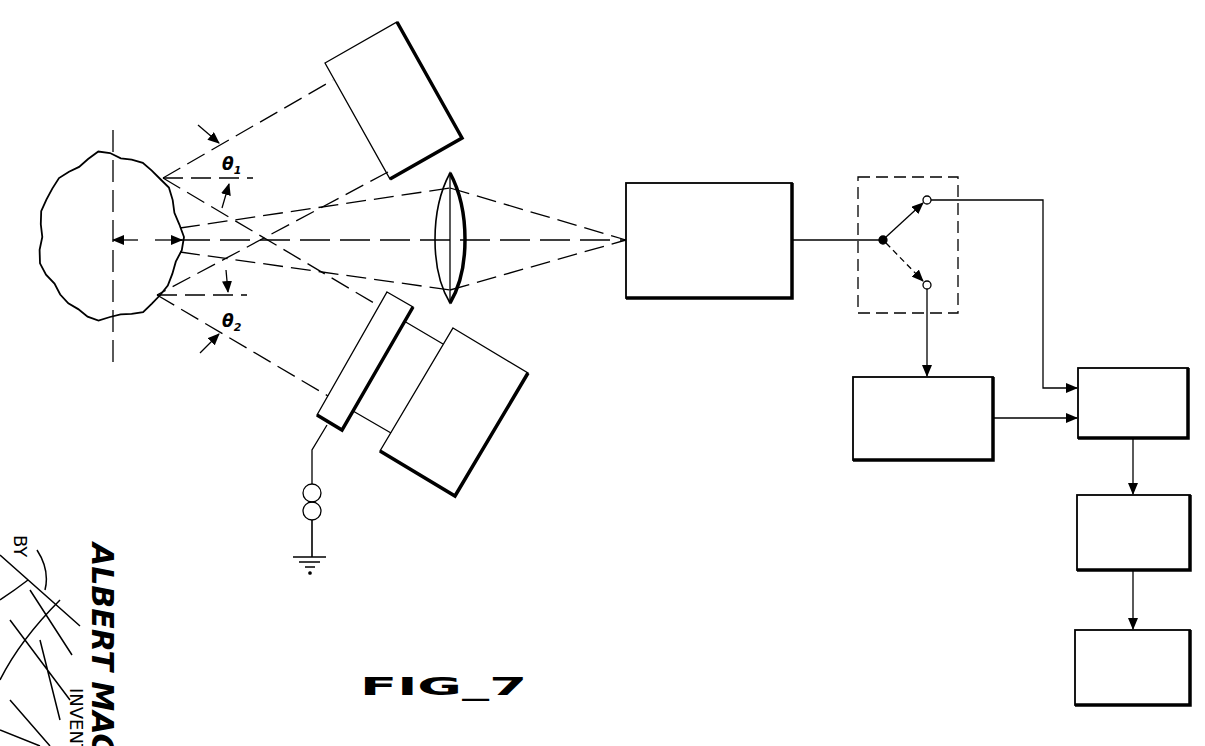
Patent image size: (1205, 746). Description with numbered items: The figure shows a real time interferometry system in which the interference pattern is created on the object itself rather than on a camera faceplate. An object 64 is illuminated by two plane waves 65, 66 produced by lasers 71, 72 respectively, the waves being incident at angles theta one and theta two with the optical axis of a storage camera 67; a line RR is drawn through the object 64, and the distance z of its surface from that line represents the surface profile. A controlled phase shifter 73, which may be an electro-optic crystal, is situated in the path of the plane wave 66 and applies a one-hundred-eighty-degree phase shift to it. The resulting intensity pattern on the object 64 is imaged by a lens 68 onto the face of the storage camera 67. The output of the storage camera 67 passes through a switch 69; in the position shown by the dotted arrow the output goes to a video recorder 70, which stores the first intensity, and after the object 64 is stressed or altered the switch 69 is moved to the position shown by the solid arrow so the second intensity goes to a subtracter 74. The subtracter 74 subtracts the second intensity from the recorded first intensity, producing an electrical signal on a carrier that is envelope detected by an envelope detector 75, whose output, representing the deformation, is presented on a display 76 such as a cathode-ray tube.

The object 64 is at (82, 157).
The plane wave 65 is at (256, 125).
The plane wave 66 is at (275, 368).
The storage camera 67 is at (716, 183).
The lens 68 is at (457, 180).
The switch 69 is at (902, 174).
The video recorder 70 is at (853, 423).
The laser 71 is at (433, 85).
The laser 72 is at (487, 447).
The controlled phase shifter 73 is at (323, 403).
The subtracter 74 is at (1128, 368).
The envelope detector 75 is at (1077, 536).
The display 76 is at (1075, 668).